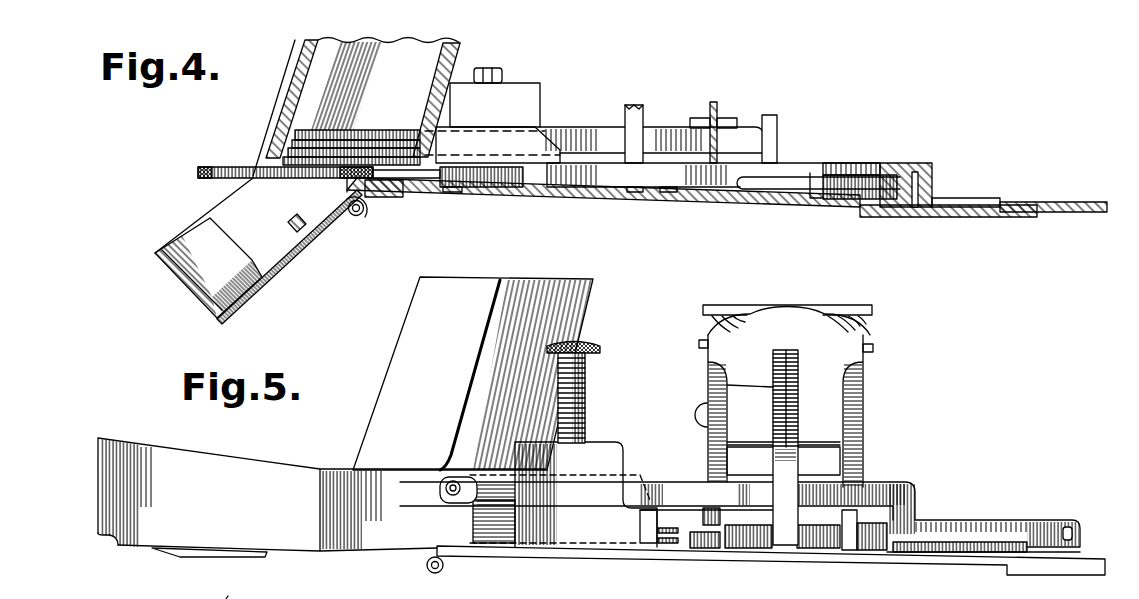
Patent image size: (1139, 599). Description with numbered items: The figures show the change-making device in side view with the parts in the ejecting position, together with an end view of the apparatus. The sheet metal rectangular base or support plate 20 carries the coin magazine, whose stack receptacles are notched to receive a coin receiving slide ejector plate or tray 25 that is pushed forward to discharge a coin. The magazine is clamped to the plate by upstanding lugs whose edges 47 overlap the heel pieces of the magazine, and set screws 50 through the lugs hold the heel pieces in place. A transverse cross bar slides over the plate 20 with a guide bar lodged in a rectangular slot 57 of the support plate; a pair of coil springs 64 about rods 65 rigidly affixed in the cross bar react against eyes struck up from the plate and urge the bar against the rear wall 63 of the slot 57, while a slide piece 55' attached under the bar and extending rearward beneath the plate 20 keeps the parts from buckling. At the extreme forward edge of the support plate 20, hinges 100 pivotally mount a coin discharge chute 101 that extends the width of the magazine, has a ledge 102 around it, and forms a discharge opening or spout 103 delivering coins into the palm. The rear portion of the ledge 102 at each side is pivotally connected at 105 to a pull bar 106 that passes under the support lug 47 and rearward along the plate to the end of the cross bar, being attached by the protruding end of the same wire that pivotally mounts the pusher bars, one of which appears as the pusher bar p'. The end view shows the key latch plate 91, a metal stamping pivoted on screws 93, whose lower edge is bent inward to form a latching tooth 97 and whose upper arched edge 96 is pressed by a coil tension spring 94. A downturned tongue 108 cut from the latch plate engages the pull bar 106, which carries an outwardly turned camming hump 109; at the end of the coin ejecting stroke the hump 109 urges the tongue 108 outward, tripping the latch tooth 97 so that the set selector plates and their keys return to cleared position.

In FIG. 4, the support plate 20 is at (580, 204).
In FIG. 4, the coin ejector tray 25 is at (363, 180).
In FIG. 4, the clamping lug edge 47 is at (530, 99).
In FIG. 5, the set screw 50 is at (586, 405).
In FIG. 4, the slide piece 55' is at (948, 226).
In FIG. 4, the slot 57 is at (953, 198).
In FIG. 4, the rear wall of slot 63 is at (998, 202).
In FIG. 4, the coil spring 64 is at (842, 177).
In FIG. 4, the rod 65 is at (792, 182).
In FIG. 5, the latch plate 91 is at (828, 405).
In FIG. 5, the screw 93 is at (699, 344).
In FIG. 5, the coil tension spring 94 is at (228, 598).
In FIG. 5, the cap 96 is at (787, 315).
In FIG. 5, the latching tooth 97 is at (828, 462).
In FIG. 4, the hinge 100 is at (352, 216).
In FIG. 5, the hinge 100 is at (445, 571).
In FIG. 4, the coin discharge chute 101 is at (233, 313).
In FIG. 5, the coin discharge chute 101 is at (192, 563).
In FIG. 4, the chute ledge 102 is at (187, 285).
In FIG. 5, the chute ledge 102 is at (267, 470).
In FIG. 5, the discharge spout 103 is at (117, 546).
In FIG. 4, the pull bar pivot 105 is at (332, 130).
In FIG. 5, the pull bar pivot 105 is at (447, 481).
In FIG. 4, the pull bar 106 is at (594, 133).
In FIG. 5, the pull bar 106 is at (672, 488).
In FIG. 5, the downturned tongue 108 is at (781, 530).
In FIG. 5, the camming hump 109 is at (727, 385).
In FIG. 4, the pusher bar p' is at (661, 203).